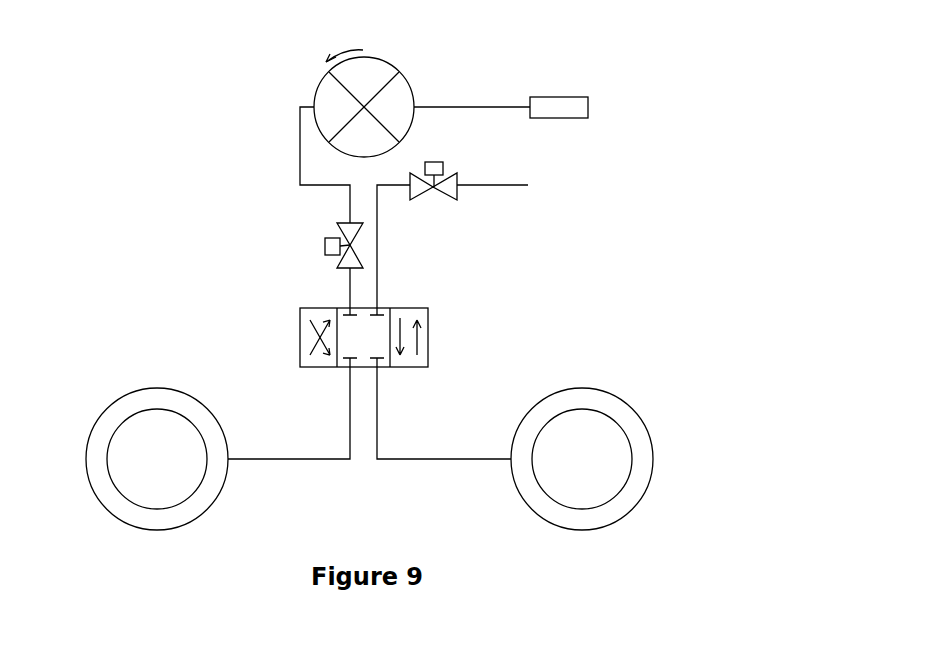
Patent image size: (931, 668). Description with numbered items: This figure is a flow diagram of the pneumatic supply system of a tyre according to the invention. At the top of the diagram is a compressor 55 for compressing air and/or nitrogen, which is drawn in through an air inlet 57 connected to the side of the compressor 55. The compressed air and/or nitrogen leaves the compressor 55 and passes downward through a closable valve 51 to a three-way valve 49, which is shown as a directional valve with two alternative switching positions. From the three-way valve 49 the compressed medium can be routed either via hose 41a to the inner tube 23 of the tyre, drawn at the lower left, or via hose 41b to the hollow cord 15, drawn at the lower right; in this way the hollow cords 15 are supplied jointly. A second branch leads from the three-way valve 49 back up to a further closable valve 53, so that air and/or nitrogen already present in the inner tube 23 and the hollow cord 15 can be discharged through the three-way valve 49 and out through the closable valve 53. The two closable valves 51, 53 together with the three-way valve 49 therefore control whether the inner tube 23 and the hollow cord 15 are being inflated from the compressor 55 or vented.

The compressor 55 is at (377, 62).
The air inlet 57 is at (551, 106).
The closable valve 53 is at (450, 193).
The closable valve 51 is at (325, 243).
The three-way valve 49 is at (420, 308).
The inner tube 23 is at (104, 410).
The hollow cord 15 is at (582, 388).
The hose 41a is at (287, 460).
The hose 41b is at (413, 460).